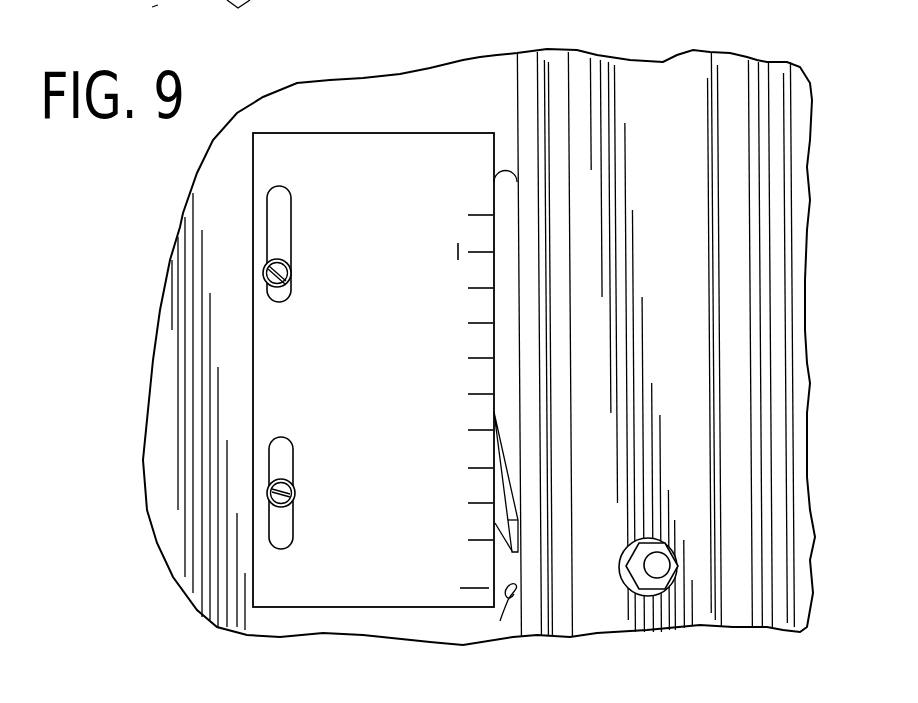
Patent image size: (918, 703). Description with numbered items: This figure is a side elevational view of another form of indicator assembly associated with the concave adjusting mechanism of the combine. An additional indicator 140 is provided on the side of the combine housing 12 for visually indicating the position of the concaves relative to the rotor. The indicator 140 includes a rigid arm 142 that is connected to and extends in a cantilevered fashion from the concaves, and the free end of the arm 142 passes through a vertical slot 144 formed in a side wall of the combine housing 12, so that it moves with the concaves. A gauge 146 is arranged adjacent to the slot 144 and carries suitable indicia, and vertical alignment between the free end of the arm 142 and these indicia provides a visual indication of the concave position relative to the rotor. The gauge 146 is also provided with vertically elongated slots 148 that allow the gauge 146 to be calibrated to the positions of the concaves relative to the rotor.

The combine housing 12 is at (477, 83).
The indicator 140 is at (394, 614).
The rigid arm 142 is at (499, 527).
The vertical slot 144 is at (500, 621).
The gauge 146 is at (386, 409).
The vertically elongated slots 148 is at (278, 238).